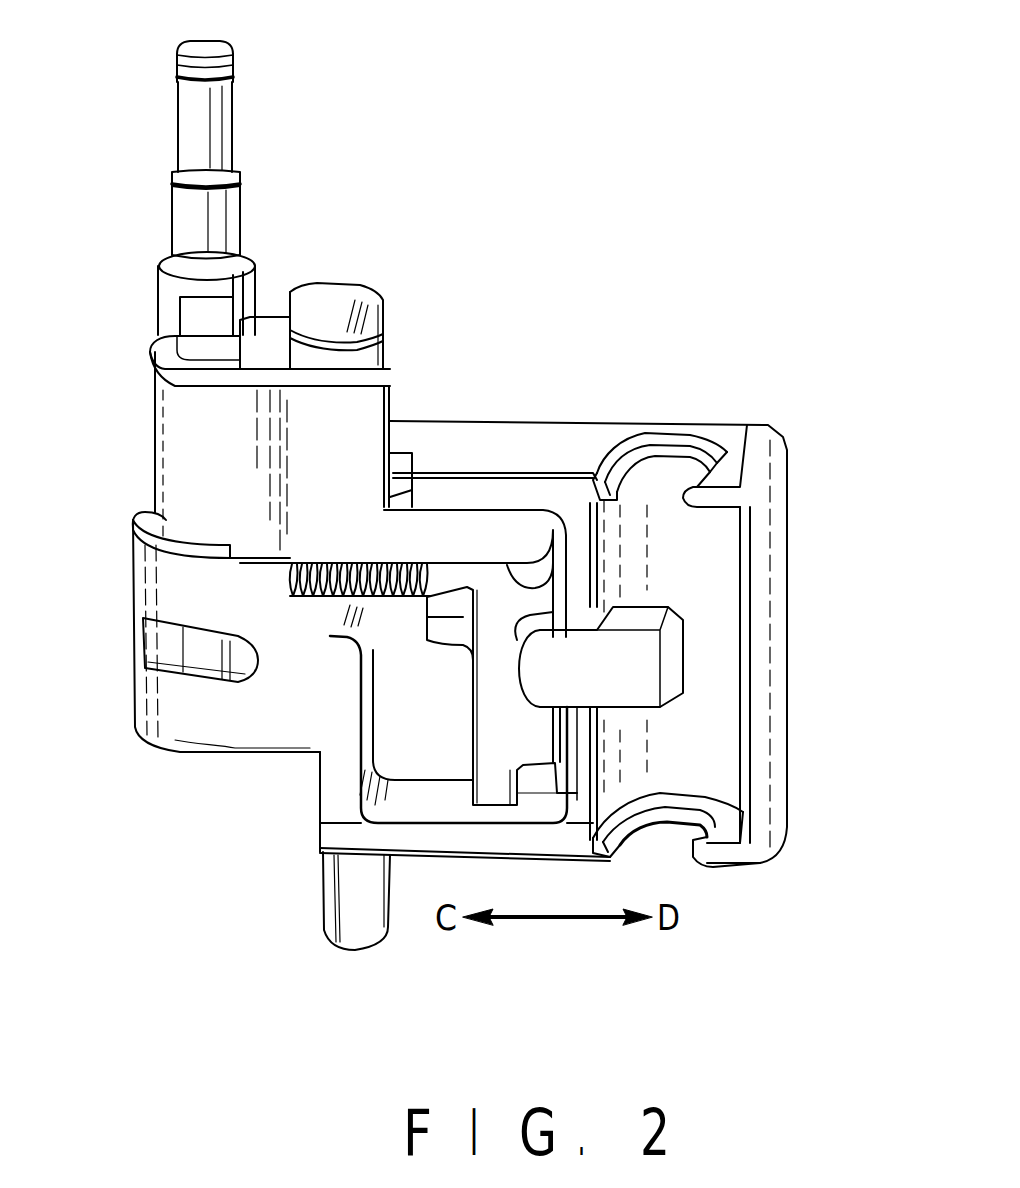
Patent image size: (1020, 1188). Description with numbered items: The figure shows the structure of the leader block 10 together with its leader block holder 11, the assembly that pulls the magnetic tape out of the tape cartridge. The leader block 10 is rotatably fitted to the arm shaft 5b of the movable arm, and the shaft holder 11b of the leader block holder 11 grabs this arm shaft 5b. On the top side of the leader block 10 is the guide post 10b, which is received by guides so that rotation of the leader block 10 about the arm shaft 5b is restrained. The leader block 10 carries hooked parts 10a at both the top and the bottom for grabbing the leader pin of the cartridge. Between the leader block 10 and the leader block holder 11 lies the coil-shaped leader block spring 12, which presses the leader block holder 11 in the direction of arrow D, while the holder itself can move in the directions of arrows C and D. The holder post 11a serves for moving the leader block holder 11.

The arm shaft 5b is at (233, 97).
The leader block 10 is at (553, 440).
The hooked parts 10a is at (676, 483).
The guide post 10b is at (334, 292).
The leader block holder 11 is at (633, 681).
The holder post 11a is at (393, 400).
The shaft holder 11b is at (182, 435).
The leader block spring 12 is at (313, 592).